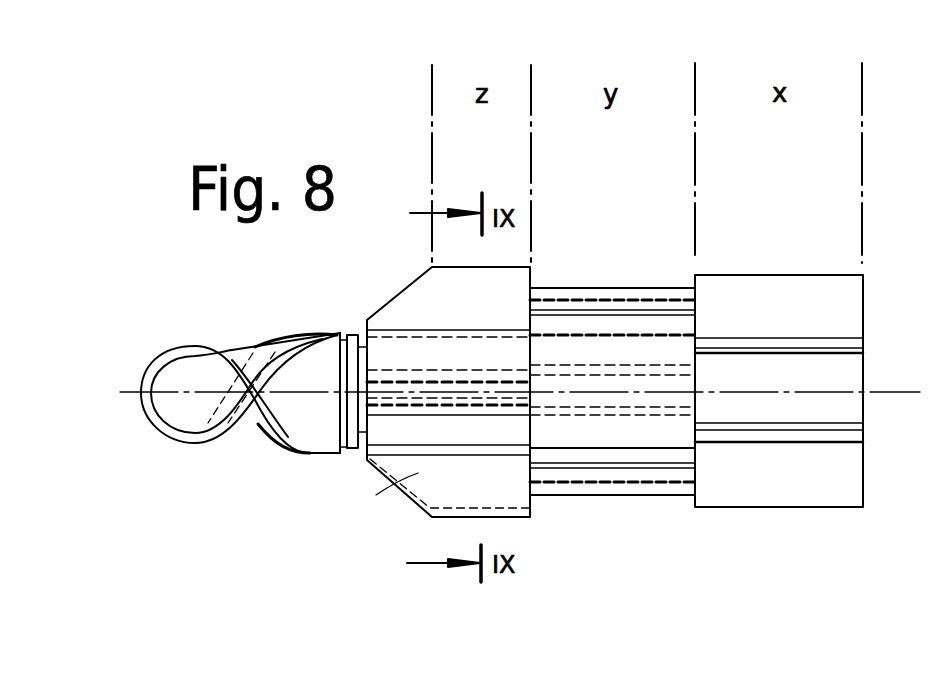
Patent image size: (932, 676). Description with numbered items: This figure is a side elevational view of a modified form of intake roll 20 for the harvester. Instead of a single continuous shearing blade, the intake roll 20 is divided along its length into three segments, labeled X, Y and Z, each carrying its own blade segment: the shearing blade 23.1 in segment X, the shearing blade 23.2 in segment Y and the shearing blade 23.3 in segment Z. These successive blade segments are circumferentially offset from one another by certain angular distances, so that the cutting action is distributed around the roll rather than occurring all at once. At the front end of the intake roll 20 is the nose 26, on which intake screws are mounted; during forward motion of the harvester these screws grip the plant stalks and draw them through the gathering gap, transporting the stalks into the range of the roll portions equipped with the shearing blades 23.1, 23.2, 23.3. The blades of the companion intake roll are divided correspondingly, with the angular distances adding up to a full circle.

The intake roll 20 is at (828, 262).
The shearing blade in segment X 23.1 is at (745, 470).
The shearing blade in segment Y 23.2 is at (616, 303).
The shearing blade in segment Z 23.3 is at (418, 313).
The nose 26 is at (250, 337).